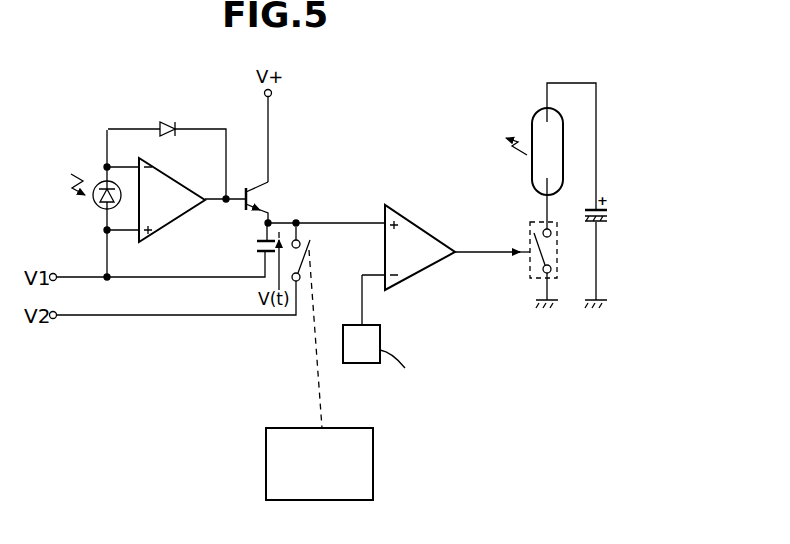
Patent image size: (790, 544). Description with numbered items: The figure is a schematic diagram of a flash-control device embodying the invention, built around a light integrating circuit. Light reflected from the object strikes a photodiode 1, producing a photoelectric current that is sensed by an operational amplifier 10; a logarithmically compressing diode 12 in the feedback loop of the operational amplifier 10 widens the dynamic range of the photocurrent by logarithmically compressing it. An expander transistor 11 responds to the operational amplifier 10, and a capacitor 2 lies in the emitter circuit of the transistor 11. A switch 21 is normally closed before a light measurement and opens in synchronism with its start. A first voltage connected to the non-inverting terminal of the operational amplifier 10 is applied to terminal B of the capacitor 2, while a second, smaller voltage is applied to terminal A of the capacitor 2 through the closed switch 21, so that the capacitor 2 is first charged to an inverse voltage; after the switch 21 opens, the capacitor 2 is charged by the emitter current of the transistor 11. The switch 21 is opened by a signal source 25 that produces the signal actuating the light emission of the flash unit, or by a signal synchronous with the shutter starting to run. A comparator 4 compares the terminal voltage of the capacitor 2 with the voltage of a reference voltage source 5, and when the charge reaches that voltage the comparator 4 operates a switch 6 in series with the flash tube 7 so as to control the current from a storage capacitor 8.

The photodiode 1 is at (97, 182).
The operational amplifier 10 is at (176, 178).
The logarithmically compressing diode 12 is at (167, 121).
The transistor 11 is at (258, 203).
The capacitor 2 is at (243, 245).
The switch 21 is at (308, 252).
The comparator 4 is at (432, 232).
The reference voltage source 5 is at (380, 340).
The signal source 25 is at (373, 467).
The switch 6 is at (527, 232).
The flash tube 7 is at (535, 121).
The storage capacitor 8 is at (607, 215).